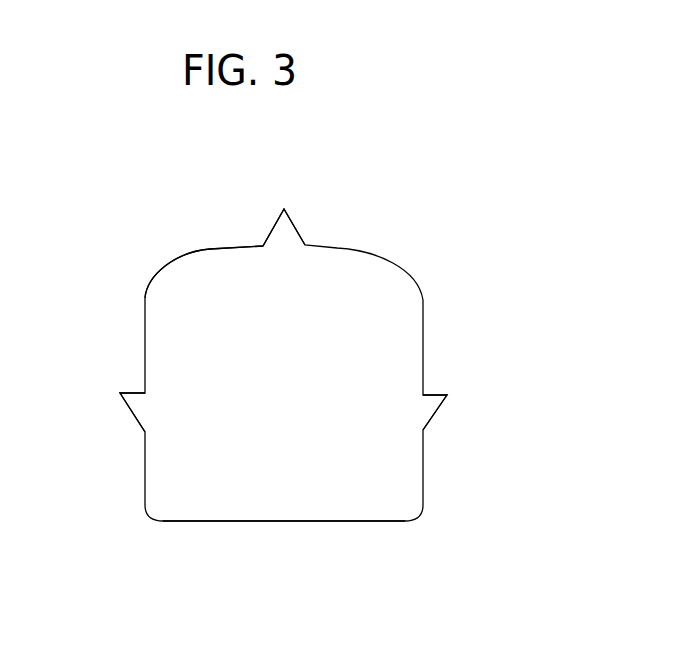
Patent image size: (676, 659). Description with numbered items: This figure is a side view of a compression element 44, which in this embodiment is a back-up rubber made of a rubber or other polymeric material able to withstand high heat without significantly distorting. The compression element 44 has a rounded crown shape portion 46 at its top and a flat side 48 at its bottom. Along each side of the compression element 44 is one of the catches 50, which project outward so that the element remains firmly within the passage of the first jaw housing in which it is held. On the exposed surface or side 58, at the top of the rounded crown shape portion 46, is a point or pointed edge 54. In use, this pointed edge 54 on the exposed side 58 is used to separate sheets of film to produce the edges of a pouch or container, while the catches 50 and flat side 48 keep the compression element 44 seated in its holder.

The compression element 44 is at (435, 178).
The rounded crown shape portion 46 is at (397, 352).
The flat side 48 is at (265, 521).
The catches 50 is at (428, 405).
The pointed edge 54 is at (283, 233).
The exposed surface 58 is at (210, 248).